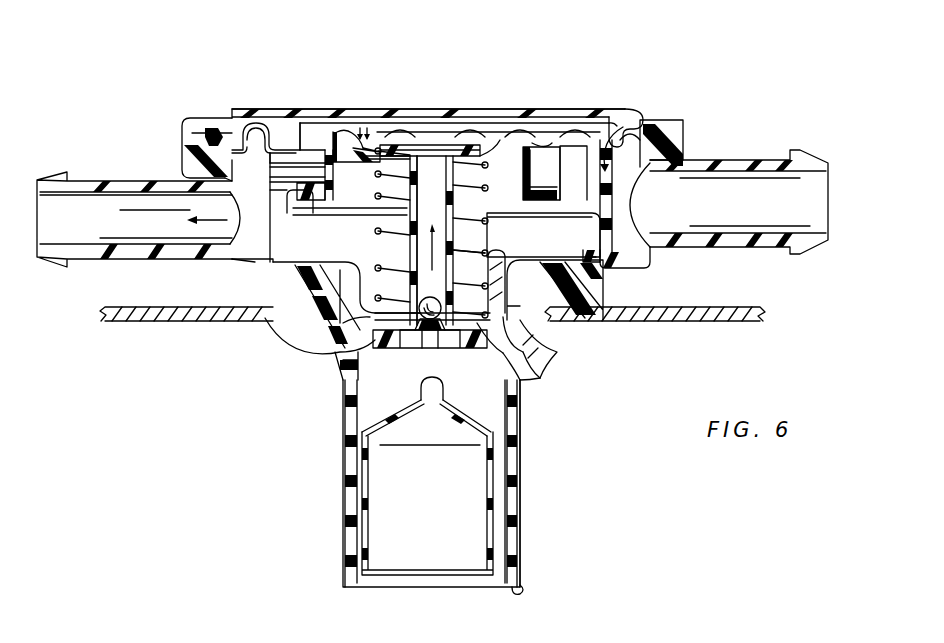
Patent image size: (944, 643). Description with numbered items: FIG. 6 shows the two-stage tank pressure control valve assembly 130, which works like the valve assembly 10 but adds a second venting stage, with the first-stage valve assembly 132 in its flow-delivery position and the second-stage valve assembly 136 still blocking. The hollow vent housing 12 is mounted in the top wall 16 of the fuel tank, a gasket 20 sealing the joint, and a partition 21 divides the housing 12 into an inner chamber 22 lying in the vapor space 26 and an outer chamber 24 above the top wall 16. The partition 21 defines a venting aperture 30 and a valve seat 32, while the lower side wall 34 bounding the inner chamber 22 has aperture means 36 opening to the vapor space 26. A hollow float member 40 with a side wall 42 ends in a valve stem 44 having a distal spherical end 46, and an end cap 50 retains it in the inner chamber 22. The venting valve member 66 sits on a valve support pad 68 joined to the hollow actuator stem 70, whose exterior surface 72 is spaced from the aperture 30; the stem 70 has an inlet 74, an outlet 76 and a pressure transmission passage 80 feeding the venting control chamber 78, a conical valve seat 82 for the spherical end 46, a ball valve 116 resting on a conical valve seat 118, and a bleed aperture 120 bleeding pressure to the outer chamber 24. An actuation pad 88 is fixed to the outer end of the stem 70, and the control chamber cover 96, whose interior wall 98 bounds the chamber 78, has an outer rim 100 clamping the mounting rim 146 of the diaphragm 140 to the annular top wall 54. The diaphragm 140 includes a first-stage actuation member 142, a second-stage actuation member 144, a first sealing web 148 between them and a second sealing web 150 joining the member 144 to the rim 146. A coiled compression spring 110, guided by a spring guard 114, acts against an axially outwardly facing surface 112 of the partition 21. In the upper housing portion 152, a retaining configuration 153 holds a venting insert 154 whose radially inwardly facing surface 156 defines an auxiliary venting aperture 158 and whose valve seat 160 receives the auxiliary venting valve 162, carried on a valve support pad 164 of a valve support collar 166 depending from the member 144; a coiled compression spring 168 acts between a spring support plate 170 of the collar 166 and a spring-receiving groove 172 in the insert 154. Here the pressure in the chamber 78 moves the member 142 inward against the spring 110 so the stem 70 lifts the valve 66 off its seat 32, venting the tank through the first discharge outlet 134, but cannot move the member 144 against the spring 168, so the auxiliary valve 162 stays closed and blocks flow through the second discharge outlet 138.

The valve assembly 10 is at (770, 65).
The hollow vent housing 12 is at (340, 458).
The top wall 16 is at (712, 306).
The gasket 20 is at (548, 330).
The partition 21 is at (370, 318).
The inner chamber 22 is at (518, 405).
The outer chamber 24 is at (243, 270).
The vapor space 26 is at (655, 414).
The venting aperture 30 is at (398, 278).
The valve seat 32 is at (550, 340).
The lower side wall 34 is at (518, 468).
The aperture means 36 is at (545, 380).
The float member 40 is at (529, 419).
The side wall 42 is at (495, 500).
The valve stem 44 is at (416, 393).
The distal spherical end 46 is at (430, 350).
The end cap 50 is at (512, 592).
The annular top wall 54 is at (197, 125).
The venting valve member 66 is at (343, 316).
The valve support pad 68 is at (340, 380).
The actuator stem 70 is at (456, 260).
The exterior surface 72 is at (429, 240).
The inlet 74 is at (488, 366).
The outlet 76 is at (443, 124).
The venting control chamber 78 is at (512, 128).
The pressure transmission passage 80 is at (453, 233).
The conical valve seat 82 is at (435, 349).
The actuation pad 88 is at (483, 130).
The control chamber cover 96 is at (639, 112).
The interior wall 98 is at (541, 135).
The outer rim 100 is at (233, 122).
The coiled compression spring 110 is at (397, 166).
The axially outwardly facing surface 112 is at (316, 292).
The spring guard 114 is at (500, 250).
The ball valve 116 is at (432, 303).
The conical valve seat 118 is at (764, 307).
The bleed aperture 120 is at (431, 240).
The two-stage tank pressure control valve assembly 130 is at (684, 104).
The first-stage valve assembly 132 is at (372, 135).
The first discharge outlet 134 is at (118, 180).
The second-stage valve assembly 136 is at (618, 126).
The second discharge outlet 138 is at (772, 160).
The diaphragm 140 is at (660, 128).
The first-stage actuation member 142 is at (399, 140).
The second-stage actuation member 144 is at (326, 135).
The mounting rim 146 is at (212, 130).
The first sealing web 148 is at (352, 140).
The second sealing web 150 is at (258, 126).
The upper housing portion 152 is at (618, 277).
The retaining configuration 153 is at (593, 256).
The venting insert 154 is at (610, 250).
The radially inwardly facing surface 156 is at (522, 198).
The auxiliary venting aperture 158 is at (571, 132).
The valve seat 160 is at (573, 206).
The auxiliary venting valve 162 is at (295, 218).
The valve support pad 164 is at (320, 219).
The valve support collar 166 is at (333, 176).
The coiled compression spring 168 is at (208, 169).
The spring support plate 170 is at (303, 140).
The spring-receiving groove 172 is at (258, 262).